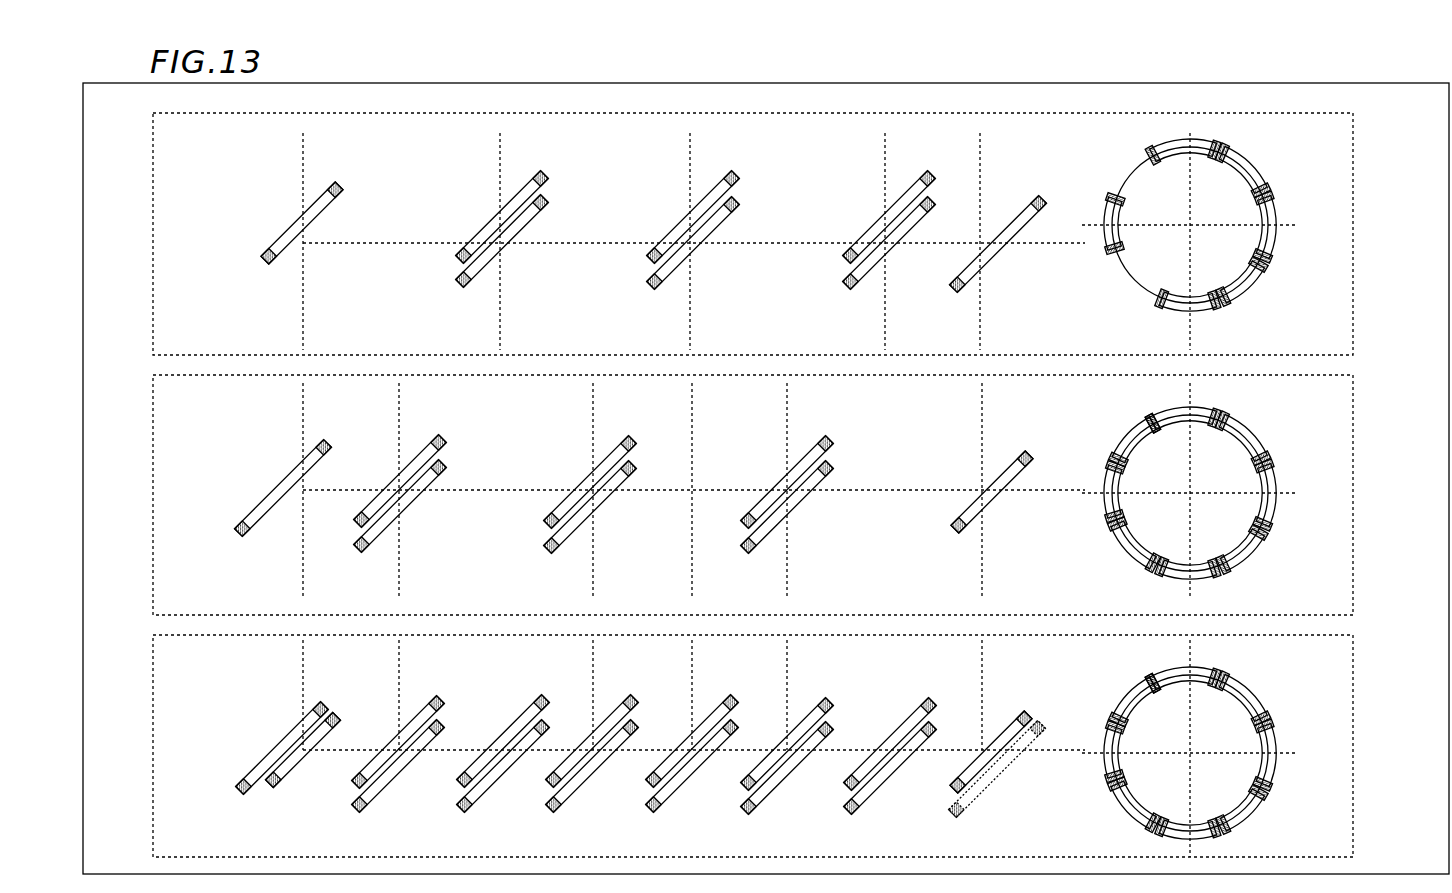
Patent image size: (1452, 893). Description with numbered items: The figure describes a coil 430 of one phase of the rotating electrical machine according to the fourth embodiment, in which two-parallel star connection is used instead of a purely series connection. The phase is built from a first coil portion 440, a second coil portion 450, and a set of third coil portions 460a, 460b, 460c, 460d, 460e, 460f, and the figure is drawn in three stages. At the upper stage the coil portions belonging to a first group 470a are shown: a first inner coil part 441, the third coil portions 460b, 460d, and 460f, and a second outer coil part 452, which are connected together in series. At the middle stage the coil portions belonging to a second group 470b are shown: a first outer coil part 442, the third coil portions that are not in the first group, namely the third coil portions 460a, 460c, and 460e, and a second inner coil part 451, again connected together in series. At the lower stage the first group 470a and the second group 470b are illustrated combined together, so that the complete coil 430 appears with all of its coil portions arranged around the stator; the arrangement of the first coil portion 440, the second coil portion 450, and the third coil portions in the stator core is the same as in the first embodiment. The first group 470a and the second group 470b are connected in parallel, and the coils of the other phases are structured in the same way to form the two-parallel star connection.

The coil 430 is at (1357, 755).
The first coil portion 440 is at (700, 463).
The first inner coil part 441 is at (300, 228).
The first outer coil part 442 is at (283, 490).
The second coil portion 450 is at (1102, 474).
The second inner coil part 451 is at (985, 488).
The second outer coil part 452 is at (1022, 217).
The third coil portion 460a is at (395, 478).
The third coil portion 460b is at (490, 230).
The third coil portion 460c is at (585, 485).
The third coil portion 460d is at (685, 232).
The third coil portion 460e is at (780, 482).
The third coil portion 460f is at (880, 232).
The first group 470a is at (1355, 237).
The second group 470b is at (1355, 495).